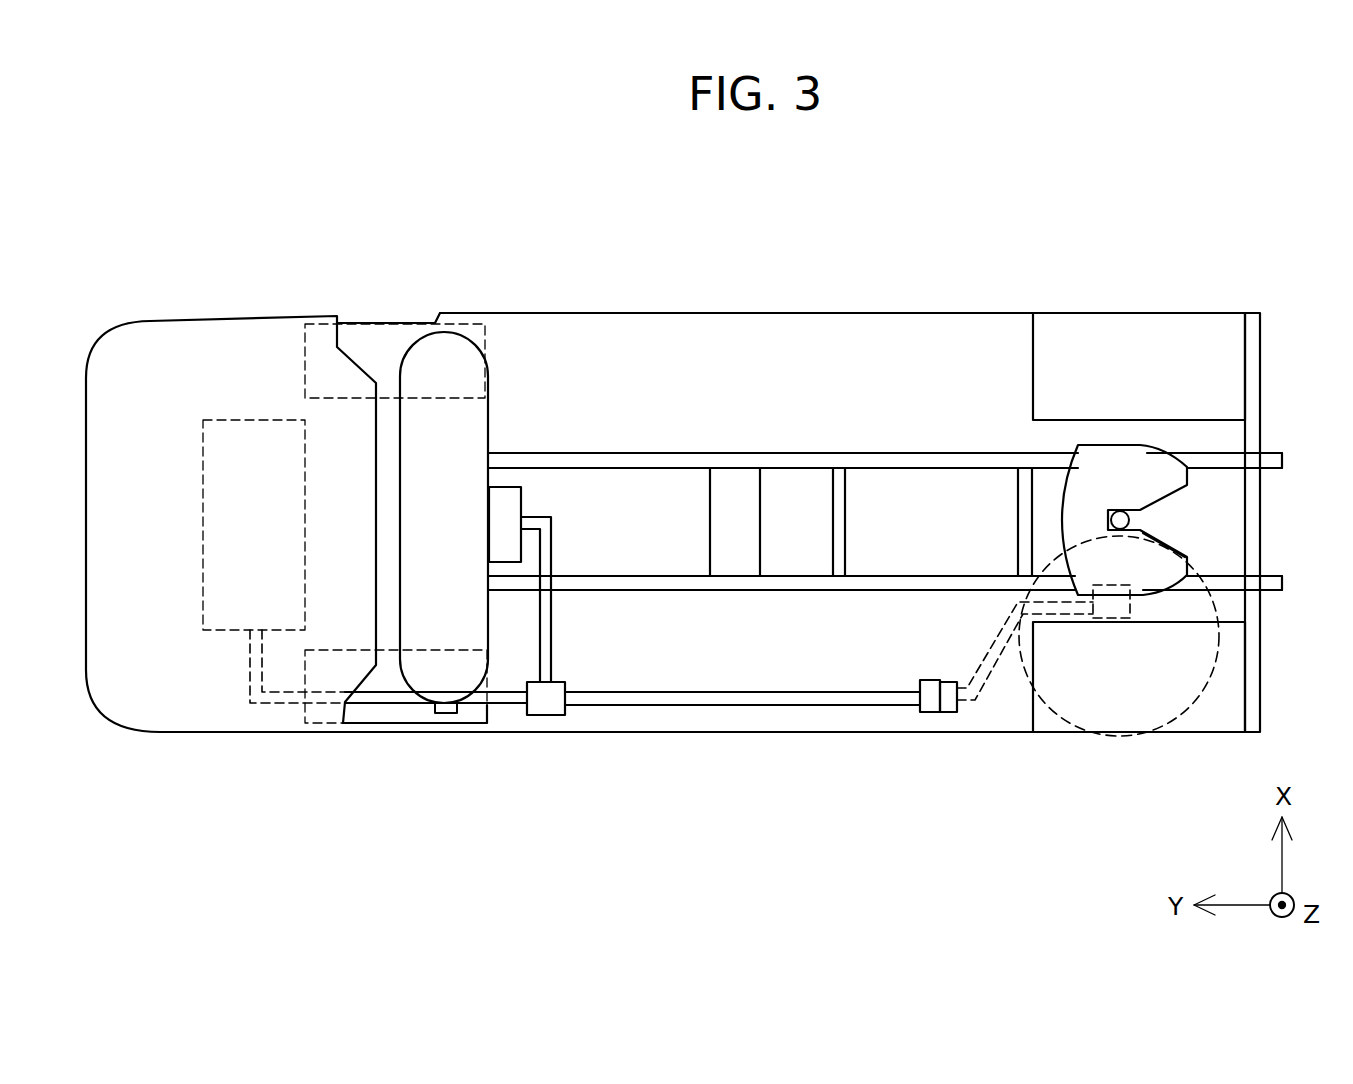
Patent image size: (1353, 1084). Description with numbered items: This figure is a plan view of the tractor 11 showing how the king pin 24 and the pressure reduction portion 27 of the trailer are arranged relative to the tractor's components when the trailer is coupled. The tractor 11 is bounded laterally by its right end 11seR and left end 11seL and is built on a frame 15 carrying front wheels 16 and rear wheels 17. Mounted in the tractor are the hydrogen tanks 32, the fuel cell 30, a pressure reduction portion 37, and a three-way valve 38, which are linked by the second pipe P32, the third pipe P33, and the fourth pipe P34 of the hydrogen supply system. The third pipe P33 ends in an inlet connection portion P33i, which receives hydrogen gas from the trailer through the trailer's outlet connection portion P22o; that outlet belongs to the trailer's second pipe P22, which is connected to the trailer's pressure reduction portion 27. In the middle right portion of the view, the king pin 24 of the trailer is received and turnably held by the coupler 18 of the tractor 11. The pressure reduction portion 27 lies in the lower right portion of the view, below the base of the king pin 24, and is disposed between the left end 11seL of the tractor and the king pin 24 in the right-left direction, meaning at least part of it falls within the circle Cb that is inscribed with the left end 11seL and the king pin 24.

The tractor 11 is at (843, 233).
The right end of the tractor 11seR is at (650, 313).
The left end of the tractor 11seL is at (742, 732).
The frame 15 is at (950, 453).
The front wheels 16 is at (368, 322).
The rear wheels 17 is at (1138, 312).
The coupler 18 is at (1147, 447).
The king pin 24 is at (1140, 517).
The pressure reduction portion 27 is at (1112, 620).
The fuel cell 30 is at (253, 420).
The tanks 32 is at (422, 335).
The pressure reduction portion 37 is at (521, 497).
The three-way valve 38 is at (552, 716).
The second pipe P22 is at (997, 640).
The outlet connection portion P22o is at (945, 713).
The second pipe P32 is at (551, 628).
The third pipe P33 is at (743, 690).
The inlet connection portion P33i is at (930, 713).
The fourth pipe P34 is at (375, 728).
The circle Cb is at (1215, 660).